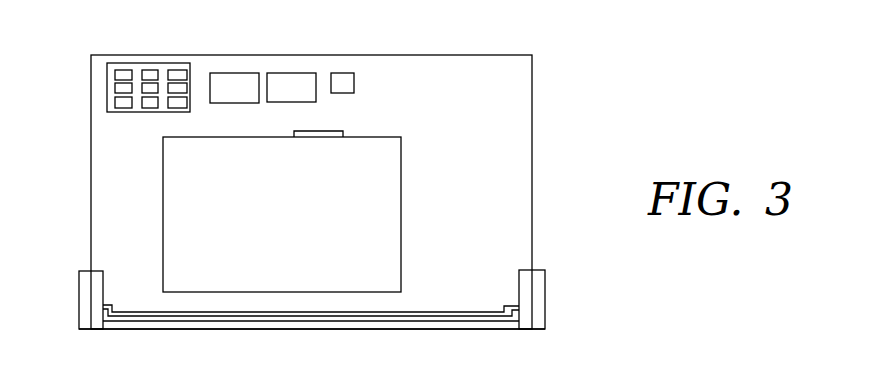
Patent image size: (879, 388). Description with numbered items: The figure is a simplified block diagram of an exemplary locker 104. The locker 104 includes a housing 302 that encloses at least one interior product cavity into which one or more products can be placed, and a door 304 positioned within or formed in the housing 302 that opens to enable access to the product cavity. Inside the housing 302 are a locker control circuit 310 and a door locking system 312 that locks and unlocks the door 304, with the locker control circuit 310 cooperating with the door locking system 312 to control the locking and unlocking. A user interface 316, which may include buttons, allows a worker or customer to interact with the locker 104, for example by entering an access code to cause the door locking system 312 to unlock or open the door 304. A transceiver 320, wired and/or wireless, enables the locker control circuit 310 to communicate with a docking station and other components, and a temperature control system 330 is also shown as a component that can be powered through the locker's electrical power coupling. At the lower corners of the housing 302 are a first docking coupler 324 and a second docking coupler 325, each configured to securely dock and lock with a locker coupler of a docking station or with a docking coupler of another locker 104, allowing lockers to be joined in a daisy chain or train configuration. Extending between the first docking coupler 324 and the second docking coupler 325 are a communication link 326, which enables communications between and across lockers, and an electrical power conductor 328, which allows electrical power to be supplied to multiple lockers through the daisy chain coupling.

The locker 104 is at (583, 70).
The housing 302 is at (502, 55).
The door 304 is at (388, 205).
The locker control circuit 310 is at (232, 82).
The door locking system 312 is at (330, 134).
The user interface 316 is at (127, 63).
The transceiver 320 is at (288, 82).
The first docking coupler 324 is at (79, 303).
The second docking coupler 325 is at (545, 302).
The communication link 326 is at (485, 321).
The electrical power conductor 328 is at (458, 312).
The temperature control system 330 is at (340, 80).